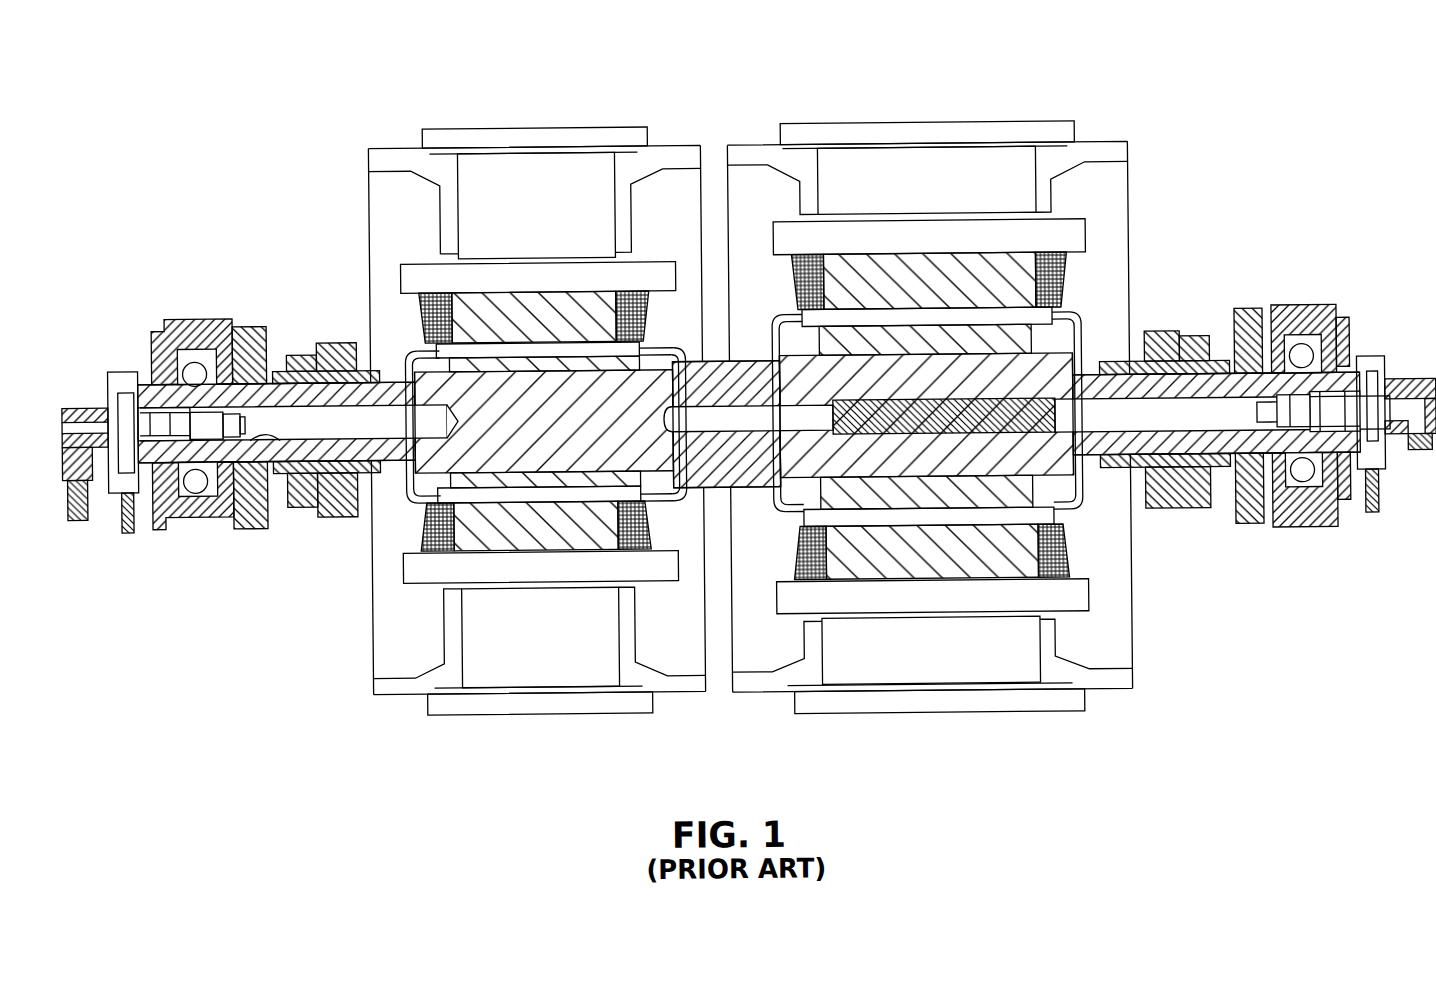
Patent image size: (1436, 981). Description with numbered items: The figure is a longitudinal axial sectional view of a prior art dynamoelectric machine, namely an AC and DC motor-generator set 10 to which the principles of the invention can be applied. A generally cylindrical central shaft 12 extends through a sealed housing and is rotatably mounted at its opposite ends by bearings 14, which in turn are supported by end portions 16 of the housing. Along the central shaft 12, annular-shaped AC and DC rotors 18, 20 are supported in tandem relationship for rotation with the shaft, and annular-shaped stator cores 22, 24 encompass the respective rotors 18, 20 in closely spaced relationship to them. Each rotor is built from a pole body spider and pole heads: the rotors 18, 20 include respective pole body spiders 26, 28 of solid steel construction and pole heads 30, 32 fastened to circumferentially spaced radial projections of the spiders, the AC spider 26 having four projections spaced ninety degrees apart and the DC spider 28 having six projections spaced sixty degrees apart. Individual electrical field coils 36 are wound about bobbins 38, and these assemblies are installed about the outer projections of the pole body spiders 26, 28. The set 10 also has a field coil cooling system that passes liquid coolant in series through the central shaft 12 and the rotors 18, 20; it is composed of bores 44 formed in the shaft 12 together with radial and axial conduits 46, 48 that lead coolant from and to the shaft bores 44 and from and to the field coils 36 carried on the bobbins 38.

The motor-generator set 10 is at (1107, 110).
The central shaft 12 is at (717, 486).
The bearings 14 is at (192, 500).
The end portions of the housing 16 is at (205, 322).
The AC rotor 18 is at (486, 249).
The DC rotor 20 is at (878, 220).
The stator core 22 is at (537, 668).
The stator core 24 is at (905, 677).
The pole body spider 26 is at (555, 299).
The pole body spider 28 is at (967, 260).
The pole head 30 is at (653, 263).
The pole head 32 is at (827, 232).
The field coils 36 is at (430, 303).
The bobbins 38 is at (608, 290).
The bores 44 is at (405, 490).
The radial conduits 46 is at (420, 498).
The axial conduits 48 is at (470, 346).